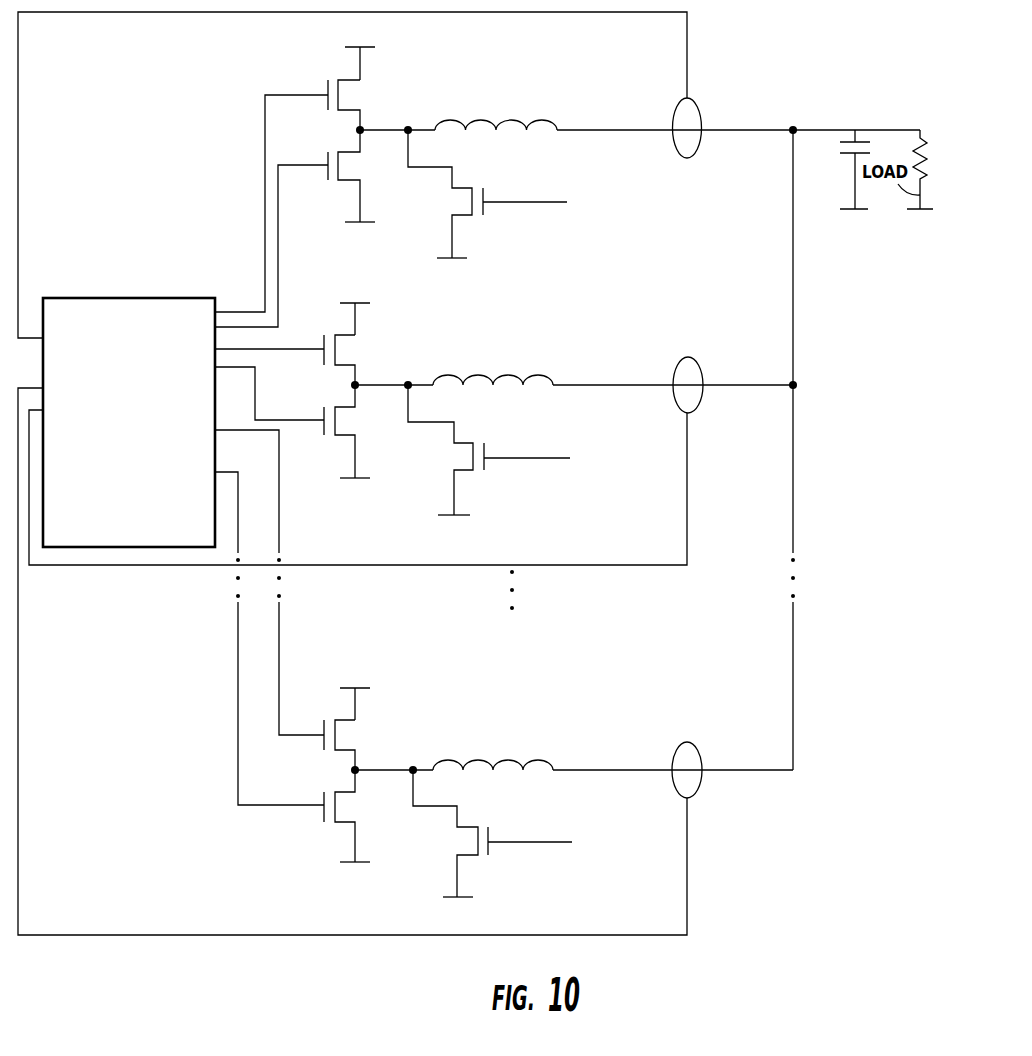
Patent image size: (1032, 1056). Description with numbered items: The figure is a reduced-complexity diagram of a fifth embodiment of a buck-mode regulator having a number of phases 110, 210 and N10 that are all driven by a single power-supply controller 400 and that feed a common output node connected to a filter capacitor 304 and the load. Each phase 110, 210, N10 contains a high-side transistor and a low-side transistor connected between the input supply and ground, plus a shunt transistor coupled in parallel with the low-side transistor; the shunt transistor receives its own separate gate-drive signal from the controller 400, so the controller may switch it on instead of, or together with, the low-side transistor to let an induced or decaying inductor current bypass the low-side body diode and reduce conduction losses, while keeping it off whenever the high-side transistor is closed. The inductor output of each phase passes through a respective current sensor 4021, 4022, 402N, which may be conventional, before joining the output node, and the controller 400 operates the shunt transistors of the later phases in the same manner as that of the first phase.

The power-supply controller 400 is at (80, 298).
The current sensor 4021 is at (699, 104).
The current sensor 4022 is at (696, 361).
The current sensor 402N is at (692, 745).
The output capacitor 304 is at (855, 191).
The phase 110 is at (567, 218).
The phase 210 is at (626, 575).
The phase N10 is at (576, 851).